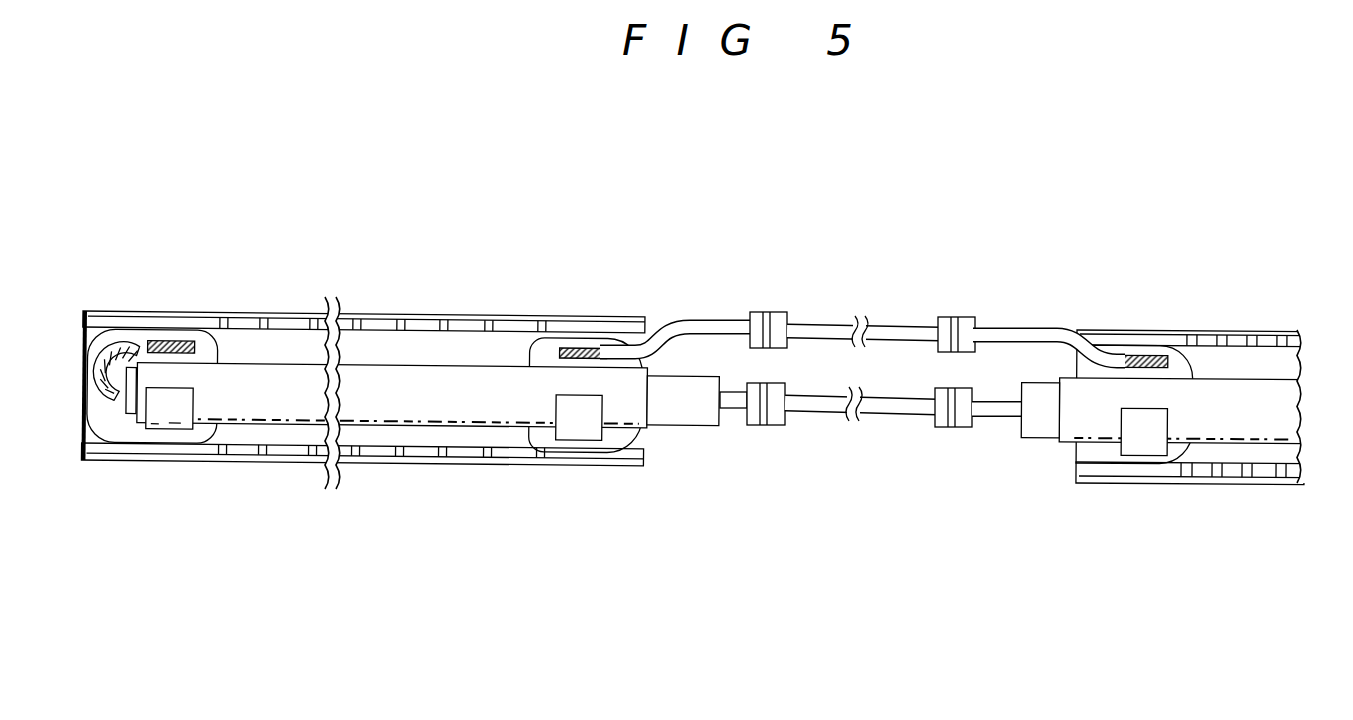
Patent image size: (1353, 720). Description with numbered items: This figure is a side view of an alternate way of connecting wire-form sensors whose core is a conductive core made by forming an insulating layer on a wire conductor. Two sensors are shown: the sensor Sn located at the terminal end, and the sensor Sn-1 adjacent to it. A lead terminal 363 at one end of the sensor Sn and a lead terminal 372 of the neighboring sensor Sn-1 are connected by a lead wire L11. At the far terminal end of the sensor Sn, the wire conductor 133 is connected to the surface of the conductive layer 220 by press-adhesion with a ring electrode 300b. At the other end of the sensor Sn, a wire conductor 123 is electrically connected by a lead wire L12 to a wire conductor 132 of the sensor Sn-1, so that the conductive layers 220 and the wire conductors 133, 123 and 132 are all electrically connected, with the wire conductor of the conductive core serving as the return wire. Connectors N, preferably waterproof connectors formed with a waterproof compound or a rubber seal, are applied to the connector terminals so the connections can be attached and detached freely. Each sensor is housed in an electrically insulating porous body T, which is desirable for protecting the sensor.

The wire conductor 133 is at (133, 350).
The conductive layer 220 is at (210, 383).
The electrically insulating porous body T is at (577, 317).
The lead terminal 363 is at (723, 318).
The lead wire L11 is at (825, 318).
The lead terminal 372 is at (1012, 330).
The wire conductor 123 is at (730, 408).
The lead wire L12 is at (861, 460).
The wire conductor 132 is at (1002, 423).
The connector N is at (957, 443).
The ring electrode 300b is at (170, 428).
The sensor located at the terminal end Sn is at (422, 436).
The sensor adjacent to the terminal end sensor Sn-1 is at (1238, 456).